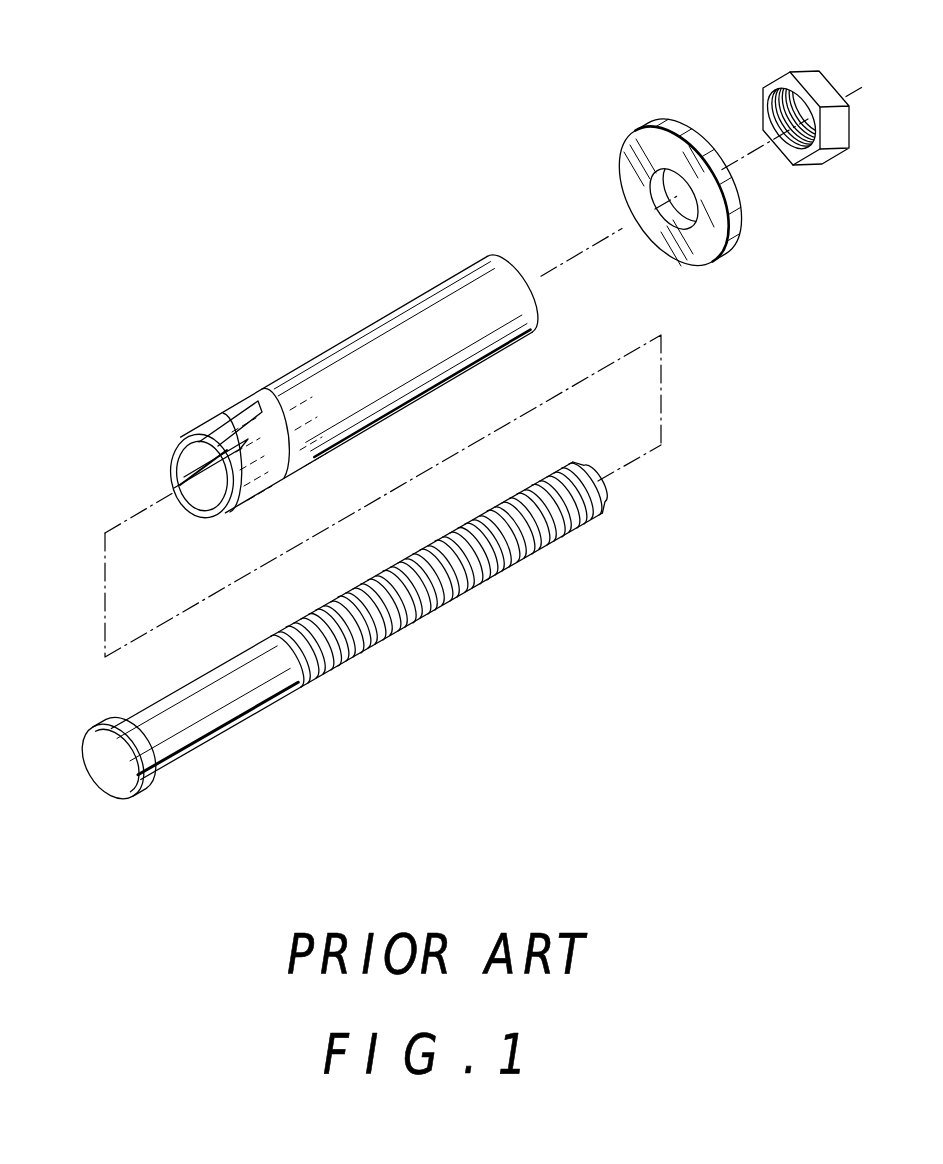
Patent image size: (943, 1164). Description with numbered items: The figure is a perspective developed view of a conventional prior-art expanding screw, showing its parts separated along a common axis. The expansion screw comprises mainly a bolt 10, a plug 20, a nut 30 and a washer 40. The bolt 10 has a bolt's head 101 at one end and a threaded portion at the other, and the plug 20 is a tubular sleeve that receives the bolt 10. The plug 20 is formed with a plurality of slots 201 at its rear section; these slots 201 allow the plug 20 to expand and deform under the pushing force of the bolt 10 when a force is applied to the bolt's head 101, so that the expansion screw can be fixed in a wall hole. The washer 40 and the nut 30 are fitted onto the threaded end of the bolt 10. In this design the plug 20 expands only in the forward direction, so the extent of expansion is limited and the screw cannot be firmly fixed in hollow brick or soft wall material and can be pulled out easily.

The bolt 10 is at (321, 656).
The bolt's head 101 is at (103, 773).
The plug 20 is at (313, 383).
The slots 201 is at (222, 418).
The nut 30 is at (820, 93).
The washer 40 is at (690, 148).